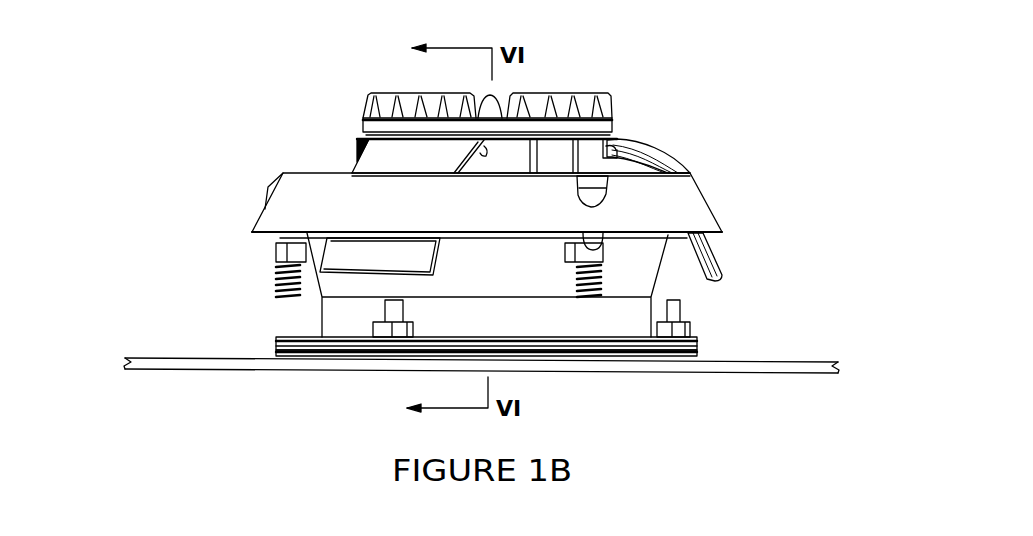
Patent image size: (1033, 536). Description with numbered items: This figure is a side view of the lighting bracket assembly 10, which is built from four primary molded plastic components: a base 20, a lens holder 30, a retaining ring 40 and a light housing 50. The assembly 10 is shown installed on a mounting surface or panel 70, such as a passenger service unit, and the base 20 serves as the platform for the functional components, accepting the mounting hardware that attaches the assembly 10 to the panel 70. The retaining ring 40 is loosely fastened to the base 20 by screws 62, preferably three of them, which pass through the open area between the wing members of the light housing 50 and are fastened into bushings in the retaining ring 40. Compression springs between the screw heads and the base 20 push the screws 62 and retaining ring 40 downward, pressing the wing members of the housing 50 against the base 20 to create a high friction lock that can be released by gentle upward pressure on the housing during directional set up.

The lighting bracket assembly 10 is at (787, 102).
The base 20 is at (700, 344).
The lens holder 30 is at (700, 355).
The retaining ring 40 is at (707, 197).
The light housing 50 is at (637, 147).
The screws 62 is at (272, 300).
The panel 70 is at (133, 358).